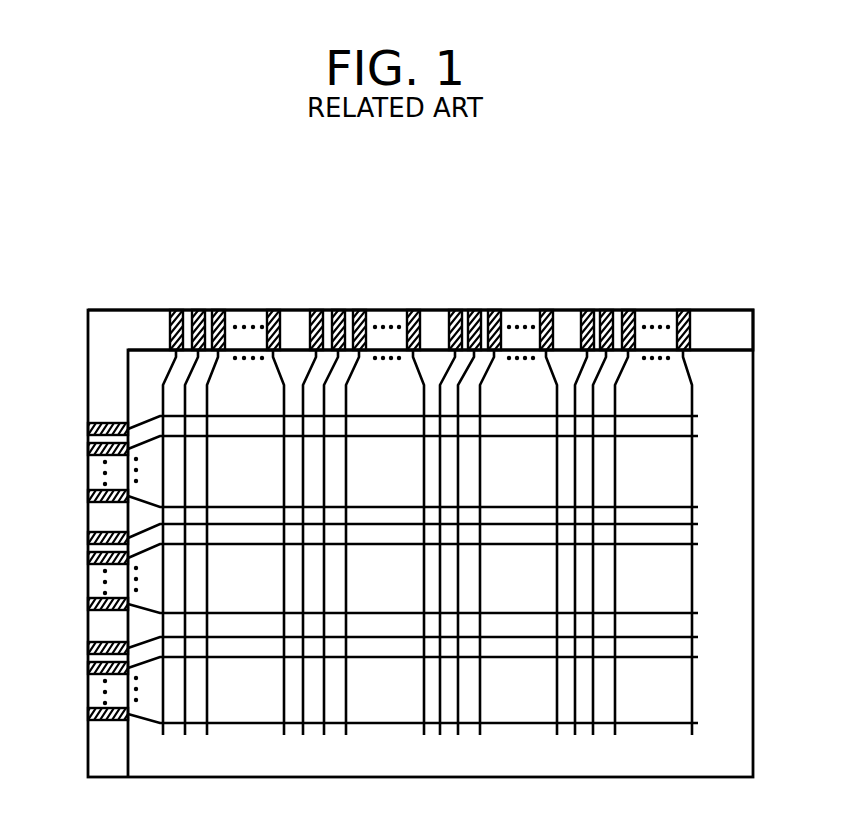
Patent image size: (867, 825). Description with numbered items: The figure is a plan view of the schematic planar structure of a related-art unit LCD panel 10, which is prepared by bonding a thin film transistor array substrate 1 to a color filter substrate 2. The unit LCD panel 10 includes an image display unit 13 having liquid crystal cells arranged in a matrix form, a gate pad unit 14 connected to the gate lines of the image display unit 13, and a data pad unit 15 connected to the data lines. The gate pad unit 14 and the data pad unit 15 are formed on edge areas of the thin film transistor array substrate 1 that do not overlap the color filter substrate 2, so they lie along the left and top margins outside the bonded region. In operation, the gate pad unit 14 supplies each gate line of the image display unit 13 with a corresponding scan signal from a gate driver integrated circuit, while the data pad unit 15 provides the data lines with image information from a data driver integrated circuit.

The unit LCD panel 10 is at (130, 293).
The thin film transistor array substrate 1 is at (742, 337).
The color filter substrate 2 is at (742, 390).
The image display unit 13 is at (400, 483).
The gate pad unit 14 is at (75, 419).
The data pad unit 15 is at (708, 309).